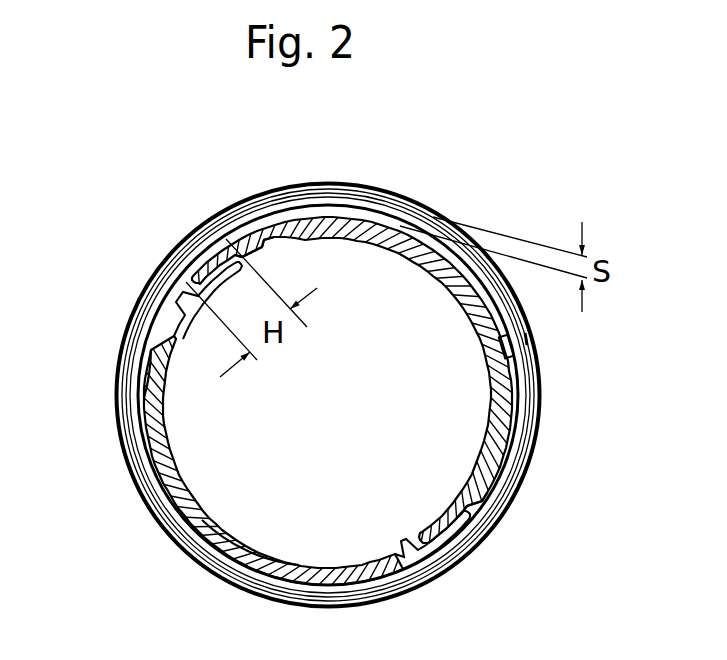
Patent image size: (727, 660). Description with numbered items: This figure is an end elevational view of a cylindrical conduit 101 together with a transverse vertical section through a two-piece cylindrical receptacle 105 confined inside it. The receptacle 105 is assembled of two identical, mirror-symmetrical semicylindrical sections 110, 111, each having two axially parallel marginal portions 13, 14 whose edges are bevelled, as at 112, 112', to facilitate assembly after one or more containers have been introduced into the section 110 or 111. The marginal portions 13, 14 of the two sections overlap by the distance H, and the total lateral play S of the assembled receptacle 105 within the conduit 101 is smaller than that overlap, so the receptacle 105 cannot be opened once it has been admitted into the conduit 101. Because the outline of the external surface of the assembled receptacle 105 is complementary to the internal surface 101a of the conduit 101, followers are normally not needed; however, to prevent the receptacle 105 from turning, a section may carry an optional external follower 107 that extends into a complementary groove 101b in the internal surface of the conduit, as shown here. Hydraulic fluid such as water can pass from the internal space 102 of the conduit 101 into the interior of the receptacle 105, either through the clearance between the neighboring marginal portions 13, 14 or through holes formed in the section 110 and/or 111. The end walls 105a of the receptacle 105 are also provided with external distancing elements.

The cylindrical conduit 101 is at (273, 187).
The internal surface of the conduit 101a is at (321, 205).
The groove 101b is at (525, 333).
The internal space of the conduit 102 is at (383, 196).
The receptacle 105 is at (243, 230).
The end walls of the receptacle 105a is at (273, 523).
The external follower 107 is at (500, 347).
The semicylindrical section 110 is at (157, 458).
The semicylindrical section 111 is at (349, 222).
The bevelled edge 112 is at (185, 210).
The bevelled edge 112' is at (141, 258).
The marginal portion 13 is at (457, 543).
The marginal portion 14 is at (463, 512).